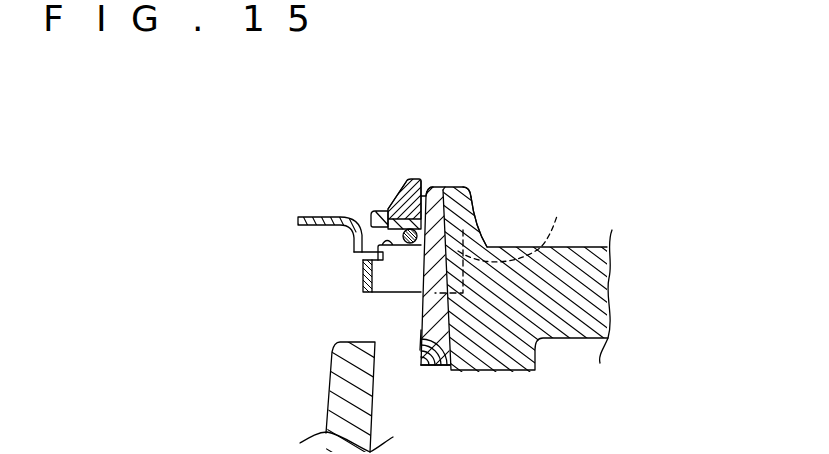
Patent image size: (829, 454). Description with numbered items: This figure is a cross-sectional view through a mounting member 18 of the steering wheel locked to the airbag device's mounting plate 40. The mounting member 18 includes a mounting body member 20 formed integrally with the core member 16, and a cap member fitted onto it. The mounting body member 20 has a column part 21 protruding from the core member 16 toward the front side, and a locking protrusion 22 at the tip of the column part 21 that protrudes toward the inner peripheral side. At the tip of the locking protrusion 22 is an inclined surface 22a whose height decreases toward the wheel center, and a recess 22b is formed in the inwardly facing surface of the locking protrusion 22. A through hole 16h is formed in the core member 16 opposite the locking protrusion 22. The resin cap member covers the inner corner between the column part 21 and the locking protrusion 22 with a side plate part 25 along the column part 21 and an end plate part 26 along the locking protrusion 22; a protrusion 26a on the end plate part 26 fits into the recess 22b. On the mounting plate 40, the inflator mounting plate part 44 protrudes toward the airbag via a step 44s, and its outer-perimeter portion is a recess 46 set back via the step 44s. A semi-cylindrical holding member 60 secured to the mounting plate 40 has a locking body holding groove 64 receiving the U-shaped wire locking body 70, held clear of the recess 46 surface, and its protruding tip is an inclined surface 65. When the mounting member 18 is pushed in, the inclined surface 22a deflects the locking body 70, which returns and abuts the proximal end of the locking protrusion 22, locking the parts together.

The core member 16 is at (577, 247).
The through hole 16h is at (437, 366).
The mounting member 18 is at (455, 182).
The mounting body member 20 is at (468, 192).
The column part 21 is at (420, 366).
The locking protrusion 22 is at (387, 210).
The inclined surface 22a is at (400, 178).
The recess 22b is at (431, 182).
The side plate part 25 is at (418, 338).
The end plate part 26 is at (371, 217).
The protrusion 26a is at (435, 185).
The mounting plate 40 is at (298, 221).
The inflator mounting plate part 44 is at (310, 228).
The step 44s is at (362, 253).
The recess 46 is at (360, 268).
The holding member 60 is at (520, 226).
The locking body holding groove 64 is at (393, 246).
The inclined surface 65 is at (392, 198).
The locking body 70 is at (469, 228).